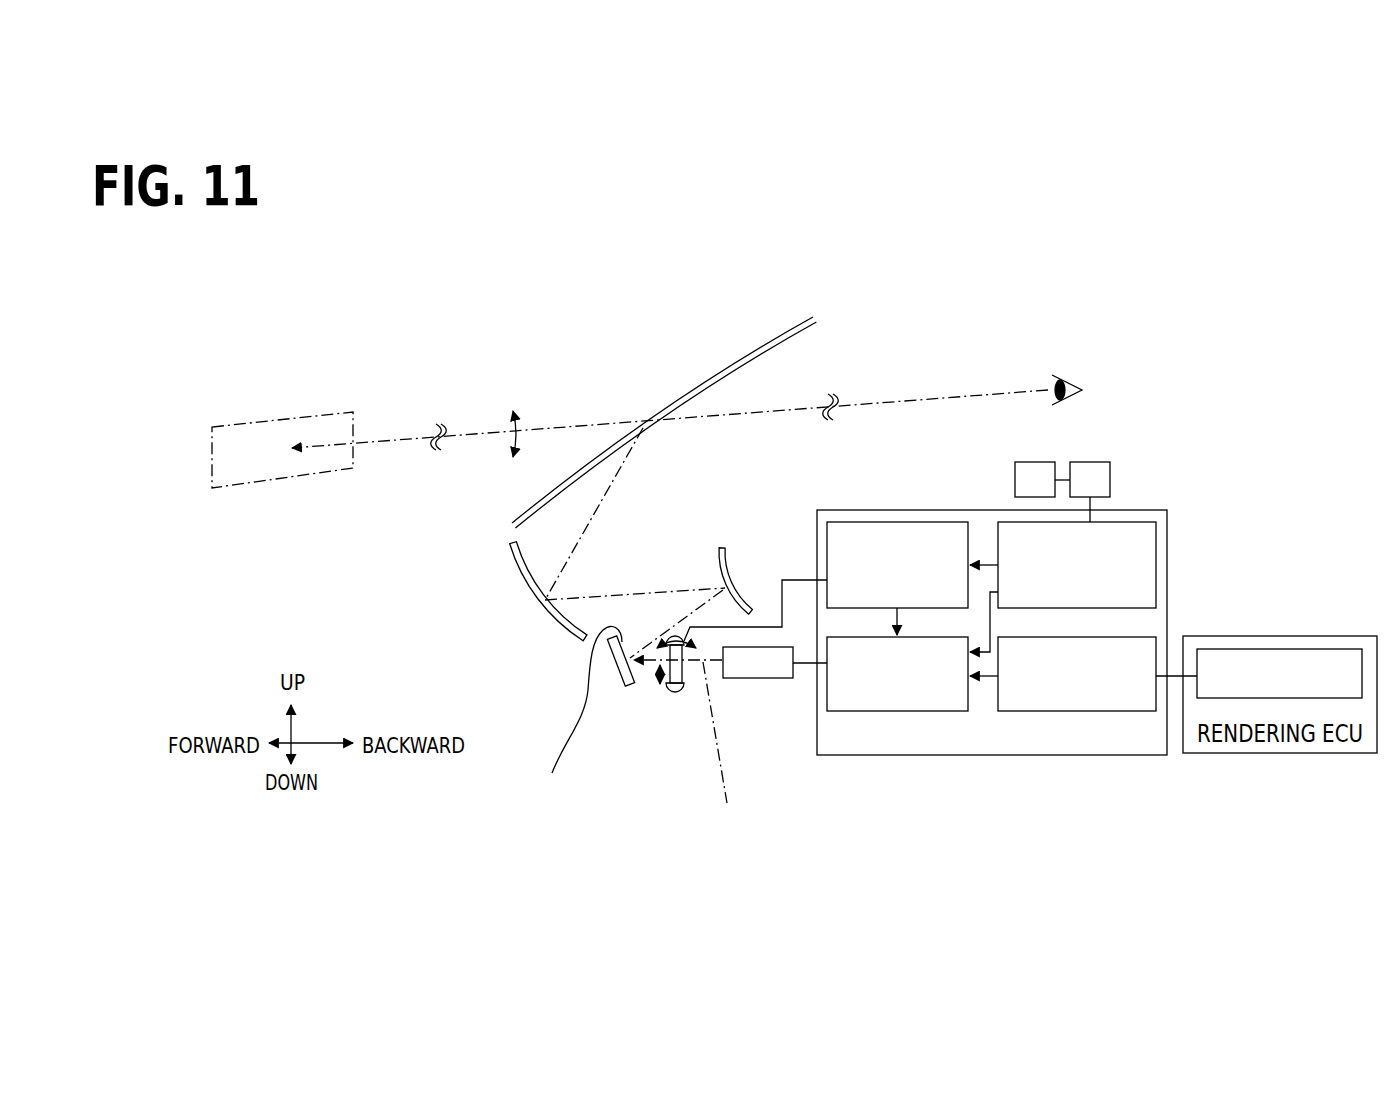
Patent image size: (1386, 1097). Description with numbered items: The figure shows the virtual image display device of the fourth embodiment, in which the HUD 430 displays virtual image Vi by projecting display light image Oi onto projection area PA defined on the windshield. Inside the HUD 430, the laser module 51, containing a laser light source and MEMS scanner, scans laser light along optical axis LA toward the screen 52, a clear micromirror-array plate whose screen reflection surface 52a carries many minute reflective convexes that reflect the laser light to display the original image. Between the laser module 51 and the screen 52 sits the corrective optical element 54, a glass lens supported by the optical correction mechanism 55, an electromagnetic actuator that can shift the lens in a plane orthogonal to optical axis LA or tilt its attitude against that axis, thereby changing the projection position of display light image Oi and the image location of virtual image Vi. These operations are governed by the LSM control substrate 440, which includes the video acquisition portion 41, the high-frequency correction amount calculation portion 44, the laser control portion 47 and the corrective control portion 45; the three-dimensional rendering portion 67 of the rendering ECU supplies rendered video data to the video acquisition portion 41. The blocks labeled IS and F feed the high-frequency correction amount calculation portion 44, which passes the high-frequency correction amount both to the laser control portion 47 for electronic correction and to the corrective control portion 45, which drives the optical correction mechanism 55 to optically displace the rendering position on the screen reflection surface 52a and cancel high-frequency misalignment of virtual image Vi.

The HUD 430 is at (503, 565).
The screen 52 is at (613, 684).
The screen reflection surface 52a is at (548, 717).
The corrective optical element 54 is at (689, 681).
The optical correction mechanism 55 is at (663, 699).
The laser module 51 is at (738, 680).
The LSM control substrate 440 is at (855, 757).
The corrective control portion 45 is at (935, 522).
The high-frequency correction amount calculation portion 44 is at (1157, 557).
The laser control portion 47 is at (825, 688).
The video acquisition portion 41 is at (1140, 711).
The 3D rendering portion 67 is at (1288, 649).
The virtual image Vi is at (243, 488).
The projection area PA is at (660, 401).
The display light image Oi is at (648, 430).
The optical axis LA is at (724, 751).
The image sensor IS is at (1035, 479).
The filter F is at (1090, 479).